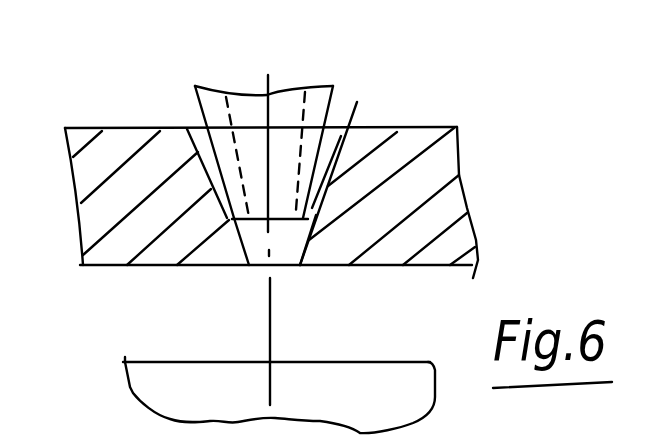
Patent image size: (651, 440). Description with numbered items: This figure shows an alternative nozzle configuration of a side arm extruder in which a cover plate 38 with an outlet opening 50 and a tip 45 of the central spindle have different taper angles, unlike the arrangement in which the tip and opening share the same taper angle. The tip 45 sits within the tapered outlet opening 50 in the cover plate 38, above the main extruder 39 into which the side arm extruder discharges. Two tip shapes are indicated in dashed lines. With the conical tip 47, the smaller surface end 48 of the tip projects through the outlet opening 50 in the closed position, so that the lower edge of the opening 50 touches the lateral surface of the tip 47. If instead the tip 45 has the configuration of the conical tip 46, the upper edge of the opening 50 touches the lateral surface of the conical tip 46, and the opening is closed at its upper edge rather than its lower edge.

The cover plate 38 is at (103, 212).
The main extruder 39 is at (147, 390).
The tip of the central spindle 45 is at (289, 100).
The conical tip configuration 46 is at (184, 122).
The conical tip configuration 47 is at (220, 108).
The smaller surface end of the tip 48 is at (282, 222).
The outlet opening 50 is at (248, 267).